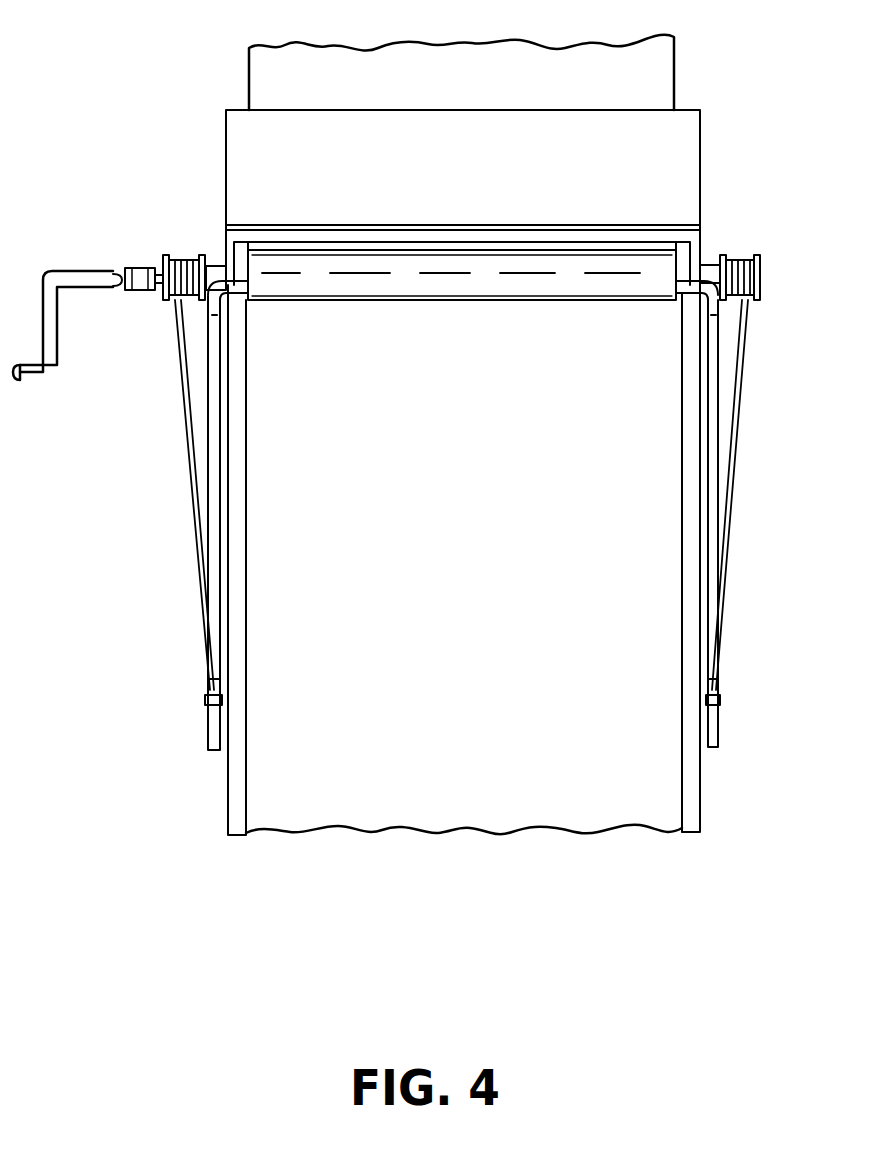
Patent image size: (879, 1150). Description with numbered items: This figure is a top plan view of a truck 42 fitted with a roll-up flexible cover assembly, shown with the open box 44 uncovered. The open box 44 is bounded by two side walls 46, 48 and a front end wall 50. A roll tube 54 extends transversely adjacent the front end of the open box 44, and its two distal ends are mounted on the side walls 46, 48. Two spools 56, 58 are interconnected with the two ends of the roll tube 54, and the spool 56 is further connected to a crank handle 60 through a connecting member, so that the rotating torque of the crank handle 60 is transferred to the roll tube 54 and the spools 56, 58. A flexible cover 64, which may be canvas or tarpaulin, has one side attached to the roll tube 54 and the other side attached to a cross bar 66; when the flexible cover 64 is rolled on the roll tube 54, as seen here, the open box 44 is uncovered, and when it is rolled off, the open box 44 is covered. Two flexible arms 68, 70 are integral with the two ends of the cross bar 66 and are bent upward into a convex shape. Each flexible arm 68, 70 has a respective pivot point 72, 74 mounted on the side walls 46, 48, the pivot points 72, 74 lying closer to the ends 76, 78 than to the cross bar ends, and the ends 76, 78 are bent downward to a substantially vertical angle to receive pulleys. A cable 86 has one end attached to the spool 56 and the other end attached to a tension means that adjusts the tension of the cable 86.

The truck 42 is at (655, 58).
The open box 44 is at (542, 772).
The side wall 46 is at (240, 783).
The side wall 48 is at (736, 558).
The front end wall 50 is at (655, 262).
The roll tube 54 is at (221, 262).
The spool 56 is at (166, 258).
The spool 58 is at (762, 292).
The crank handle 60 is at (84, 268).
The flexible cover 64 is at (506, 303).
The cross bar 66 is at (248, 300).
The flexible arm 68 is at (210, 492).
The flexible arm 70 is at (720, 496).
The pivot point 72 is at (206, 698).
The pivot point 74 is at (720, 697).
The end 76 is at (212, 750).
The end 78 is at (720, 742).
The cable 86 is at (182, 410).